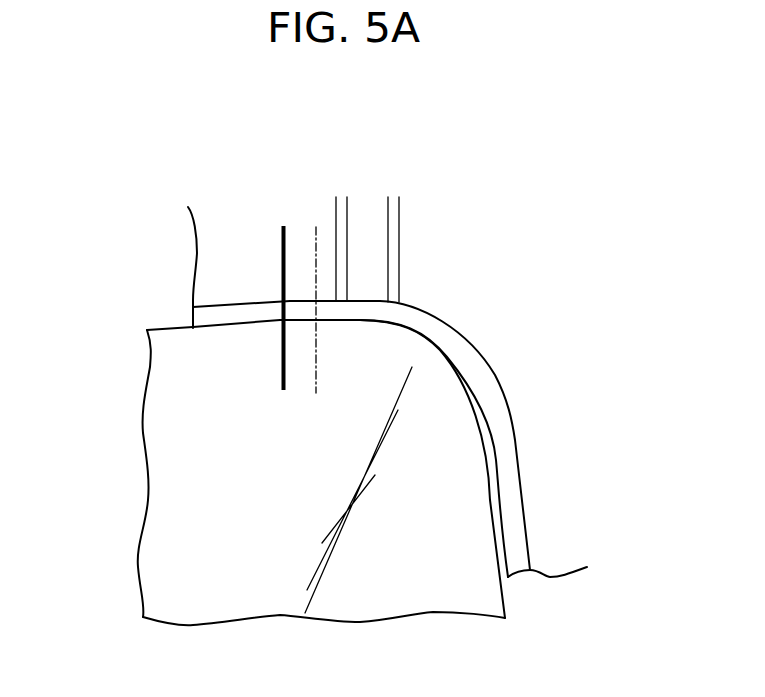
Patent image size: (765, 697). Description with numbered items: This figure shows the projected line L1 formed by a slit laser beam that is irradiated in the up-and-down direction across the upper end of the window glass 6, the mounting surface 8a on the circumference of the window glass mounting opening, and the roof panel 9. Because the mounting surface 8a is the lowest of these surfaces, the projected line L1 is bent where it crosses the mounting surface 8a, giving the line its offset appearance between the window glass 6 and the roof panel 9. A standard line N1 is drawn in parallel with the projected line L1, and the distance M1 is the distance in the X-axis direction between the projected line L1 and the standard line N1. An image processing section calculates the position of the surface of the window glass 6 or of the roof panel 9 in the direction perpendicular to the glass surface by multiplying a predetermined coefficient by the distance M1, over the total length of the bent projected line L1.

The window glass 6 is at (173, 387).
The mounting surface 8a is at (220, 315).
The roof panel 9 is at (205, 223).
The projected line L1 is at (285, 242).
The distance M1 is at (282, 273).
The standard line N1 is at (316, 273).